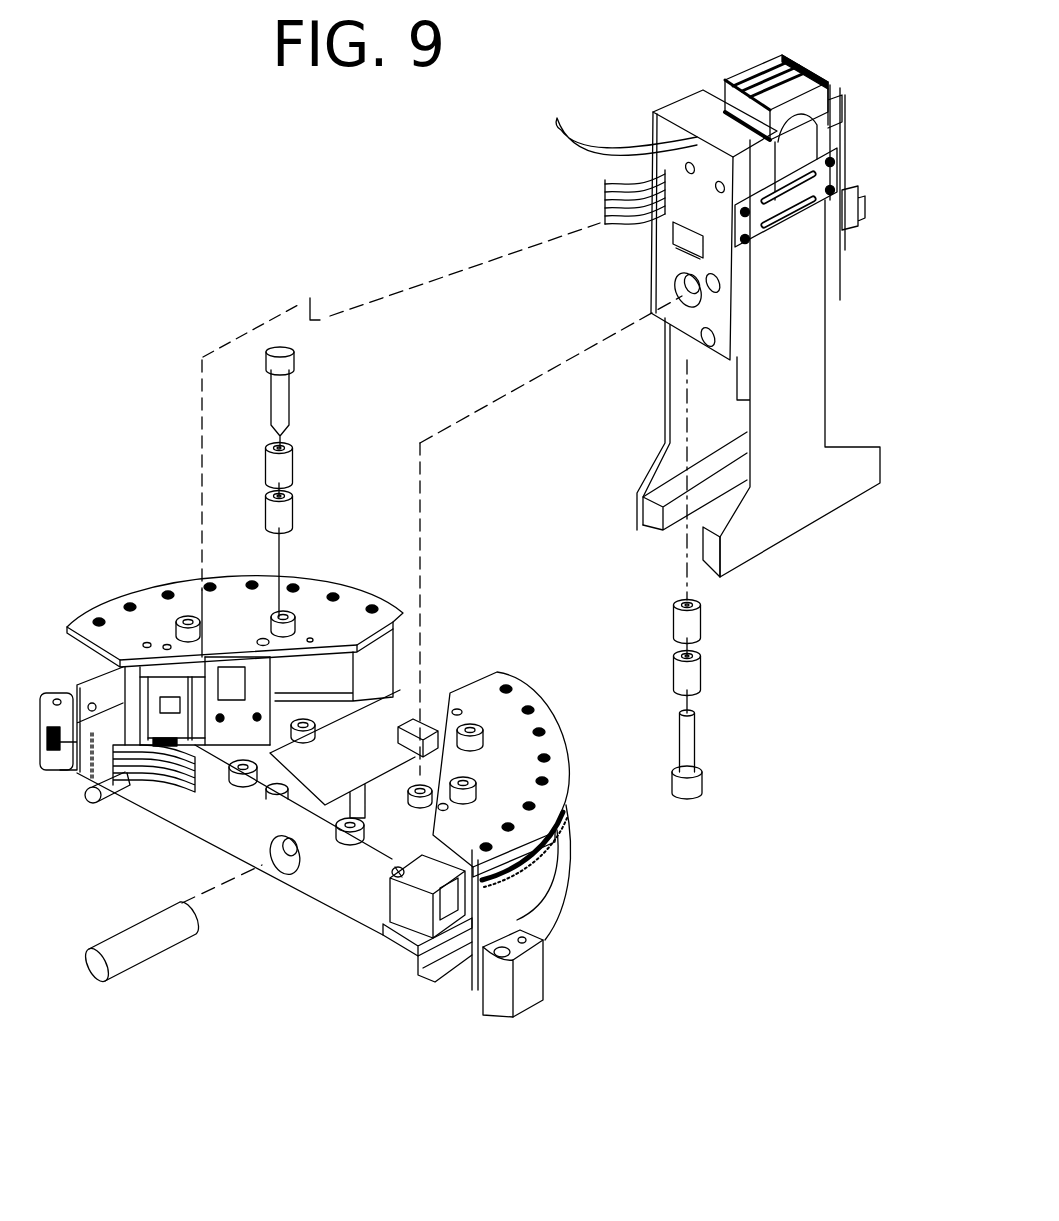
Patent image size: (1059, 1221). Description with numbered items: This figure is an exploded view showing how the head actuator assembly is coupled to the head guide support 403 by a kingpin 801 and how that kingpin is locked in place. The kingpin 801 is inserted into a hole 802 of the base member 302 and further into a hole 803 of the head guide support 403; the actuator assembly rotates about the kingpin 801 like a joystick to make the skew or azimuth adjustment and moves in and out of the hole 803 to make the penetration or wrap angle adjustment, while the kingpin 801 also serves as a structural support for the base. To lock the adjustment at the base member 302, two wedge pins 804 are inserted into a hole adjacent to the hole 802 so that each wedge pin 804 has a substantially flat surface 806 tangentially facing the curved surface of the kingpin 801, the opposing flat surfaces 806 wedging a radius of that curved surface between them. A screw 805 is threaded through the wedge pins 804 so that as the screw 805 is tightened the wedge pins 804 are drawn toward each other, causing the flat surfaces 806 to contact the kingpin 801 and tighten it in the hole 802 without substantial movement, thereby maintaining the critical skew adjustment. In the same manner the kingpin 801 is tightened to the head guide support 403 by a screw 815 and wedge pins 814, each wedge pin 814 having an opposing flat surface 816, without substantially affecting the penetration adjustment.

The base member 302 is at (683, 112).
The hole 802 is at (690, 296).
The wedge pins 804 is at (673, 672).
The flat surface 806 is at (693, 668).
The screw 805 is at (690, 753).
The screw 815 is at (283, 393).
The wedge pins 814 is at (268, 522).
The opposing flat surface 816 is at (291, 503).
The kingpin 801 is at (130, 977).
The hole 803 is at (297, 873).
The head guide support 403 is at (550, 930).